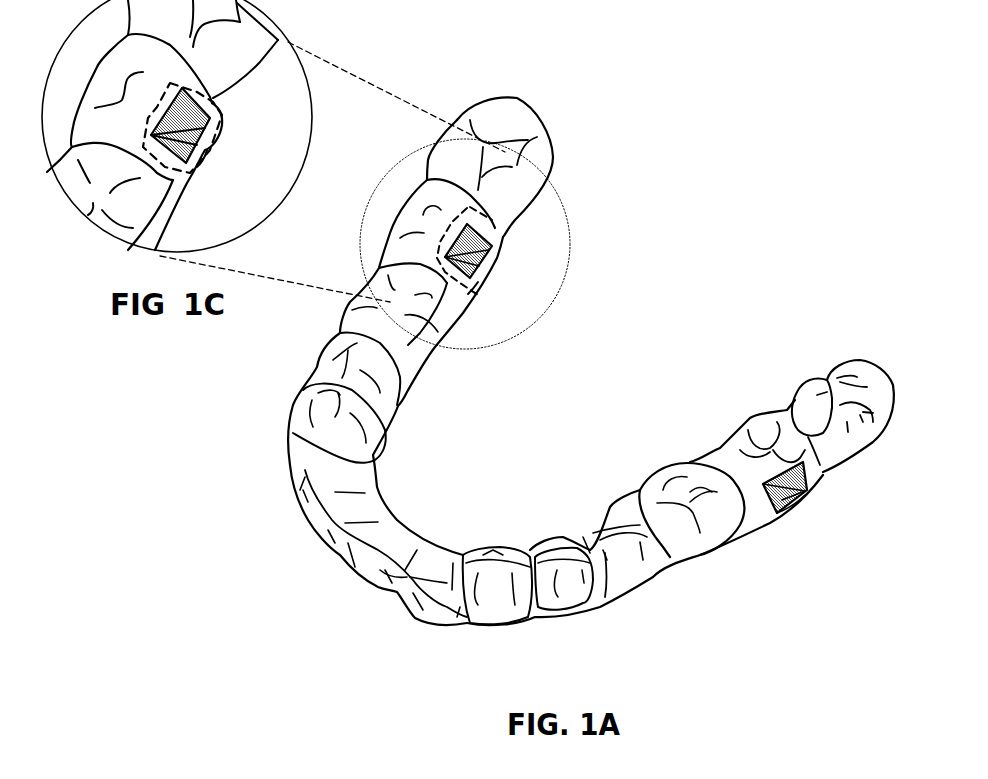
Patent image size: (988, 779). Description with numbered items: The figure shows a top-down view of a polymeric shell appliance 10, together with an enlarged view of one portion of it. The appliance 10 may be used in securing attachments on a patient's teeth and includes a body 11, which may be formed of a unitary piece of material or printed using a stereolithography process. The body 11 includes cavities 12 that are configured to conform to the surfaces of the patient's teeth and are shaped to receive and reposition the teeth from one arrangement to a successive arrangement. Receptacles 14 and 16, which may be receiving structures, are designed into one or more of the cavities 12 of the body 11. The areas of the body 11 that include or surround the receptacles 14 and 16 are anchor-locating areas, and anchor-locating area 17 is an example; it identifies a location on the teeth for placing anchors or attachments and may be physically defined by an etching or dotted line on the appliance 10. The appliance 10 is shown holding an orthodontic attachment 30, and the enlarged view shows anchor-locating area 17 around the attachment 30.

In FIG. 1A, the polymeric shell appliance 10 is at (316, 617).
In FIG. 1A, the body 11 is at (488, 98).
In FIG. 1A, the cavities 12 is at (435, 345).
In FIG. 1A, the receptacle 14 is at (800, 498).
In FIG. 1C, the receptacle 16 is at (199, 152).
In FIG. 1A, the receptacle 16 is at (480, 283).
In FIG. 1C, the anchor-locating area 17 is at (213, 100).
In FIG. 1A, the anchor-locating area 17 is at (489, 229).
In FIG. 1C, the attachment 30 is at (152, 134).
In FIG. 1A, the attachment 30 is at (465, 259).